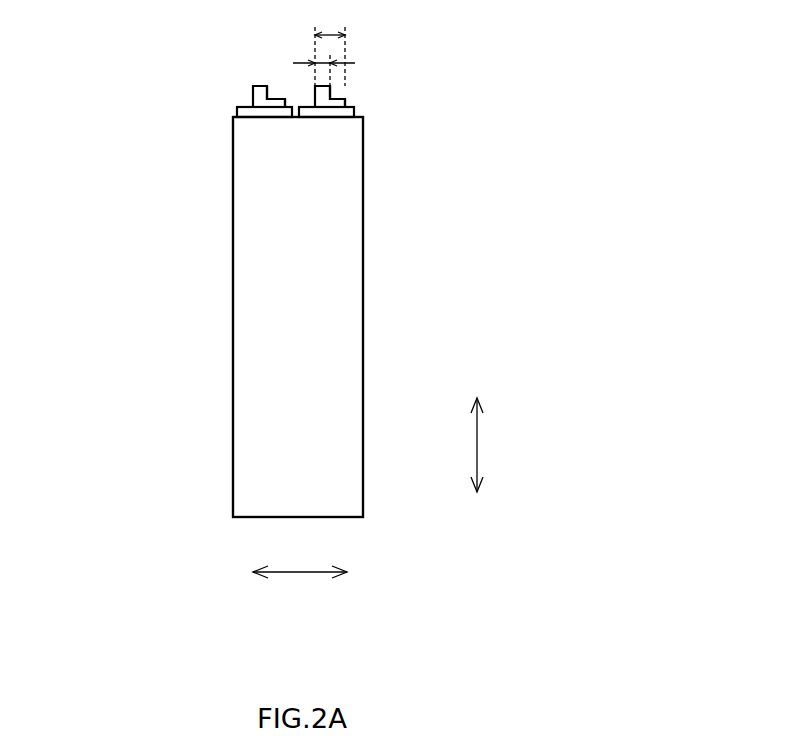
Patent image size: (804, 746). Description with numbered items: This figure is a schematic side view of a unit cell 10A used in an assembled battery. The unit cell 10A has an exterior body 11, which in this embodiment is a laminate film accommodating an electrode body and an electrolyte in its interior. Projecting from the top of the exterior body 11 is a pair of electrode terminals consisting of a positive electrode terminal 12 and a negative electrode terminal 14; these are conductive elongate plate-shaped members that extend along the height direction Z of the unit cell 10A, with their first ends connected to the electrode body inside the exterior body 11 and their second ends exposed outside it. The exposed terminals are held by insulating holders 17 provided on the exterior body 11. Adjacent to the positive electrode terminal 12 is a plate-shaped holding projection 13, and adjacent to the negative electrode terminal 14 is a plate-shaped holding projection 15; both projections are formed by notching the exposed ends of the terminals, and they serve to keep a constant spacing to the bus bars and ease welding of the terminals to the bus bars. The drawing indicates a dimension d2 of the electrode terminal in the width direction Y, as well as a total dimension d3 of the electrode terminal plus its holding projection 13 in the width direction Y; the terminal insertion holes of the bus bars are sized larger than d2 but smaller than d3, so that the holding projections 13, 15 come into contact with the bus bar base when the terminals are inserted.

The unit cell 10A is at (58, 70).
The exterior body 11 is at (355, 243).
The positive electrode terminal 12 is at (324, 90).
The holding projection 13 is at (346, 103).
The negative electrode terminal 14 is at (255, 86).
The holding projection 15 is at (279, 100).
The insulating holder 17 is at (238, 107).
The dimension of the electrode terminals in the width direction d2 is at (325, 62).
The total dimension of the electrode terminals plus the holding projections d3 is at (330, 44).
The height direction Z is at (488, 445).
The width direction Y is at (300, 586).